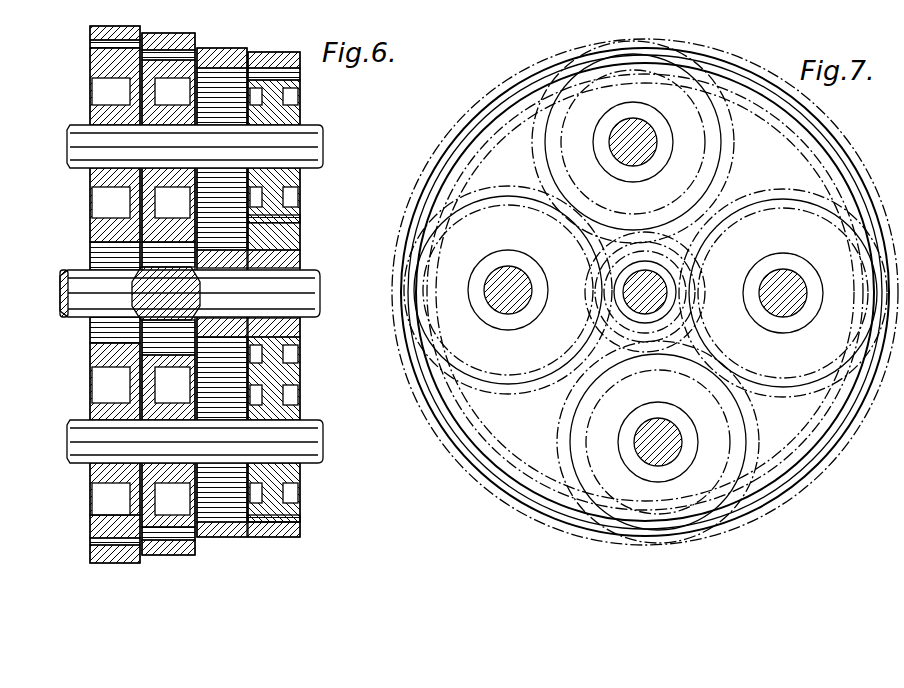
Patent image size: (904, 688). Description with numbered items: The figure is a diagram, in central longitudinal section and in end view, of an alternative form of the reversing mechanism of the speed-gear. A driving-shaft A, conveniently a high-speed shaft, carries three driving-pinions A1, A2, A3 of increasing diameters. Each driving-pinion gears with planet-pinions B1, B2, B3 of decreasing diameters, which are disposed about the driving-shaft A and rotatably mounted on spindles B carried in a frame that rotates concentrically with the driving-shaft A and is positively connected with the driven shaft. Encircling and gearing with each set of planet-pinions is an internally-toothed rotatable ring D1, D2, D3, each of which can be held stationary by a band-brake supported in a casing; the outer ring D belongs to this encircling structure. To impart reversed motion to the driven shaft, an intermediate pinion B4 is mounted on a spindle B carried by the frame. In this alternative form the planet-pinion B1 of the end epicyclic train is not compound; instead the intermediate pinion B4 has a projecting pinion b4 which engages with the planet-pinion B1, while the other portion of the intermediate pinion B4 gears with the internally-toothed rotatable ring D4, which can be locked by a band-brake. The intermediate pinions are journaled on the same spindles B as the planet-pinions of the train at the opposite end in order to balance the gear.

In FIG. 6, the driving-shaft A is at (88, 287).
In FIG. 7, the driving-shaft A is at (690, 262).
In FIG. 6, the driving-pinion A1 is at (300, 272).
In FIG. 7, the driving-pinion A1 is at (648, 335).
In FIG. 6, the driving-pinion A2 is at (290, 326).
In FIG. 7, the driving-pinion A2 is at (675, 350).
In FIG. 6, the driving-pinion A3 is at (285, 360).
In FIG. 7, the driving-pinion A3 is at (690, 318).
In FIG. 6, the spindle B is at (320, 135).
In FIG. 7, the spindle B is at (628, 128).
In FIG. 7, the planet-pinion B1 is at (435, 252).
In FIG. 7, the planet-pinion B2 is at (425, 255).
In FIG. 6, the planet-pinion B3 is at (300, 208).
In FIG. 7, the planet-pinion B3 is at (708, 148).
In FIG. 6, the intermediate pinion B4 is at (90, 241).
In FIG. 7, the intermediate pinion B4 is at (668, 48).
In FIG. 6, the projecting pinion b4 is at (90, 222).
In FIG. 7, the projecting pinion b4 is at (690, 72).
In FIG. 7, the casing D is at (846, 206).
In FIG. 6, the internally-toothed rotatable ring D1 is at (92, 545).
In FIG. 7, the internally-toothed rotatable ring D1 is at (445, 405).
In FIG. 6, the internally-toothed rotatable ring D2 is at (300, 530).
In FIG. 7, the internally-toothed rotatable ring D2 is at (428, 389).
In FIG. 6, the internally-toothed rotatable ring D3 is at (268, 540).
In FIG. 7, the internally-toothed rotatable ring D3 is at (412, 369).
In FIG. 6, the internally-toothed rotatable ring D4 is at (98, 540).
In FIG. 7, the internally-toothed rotatable ring D4 is at (465, 417).